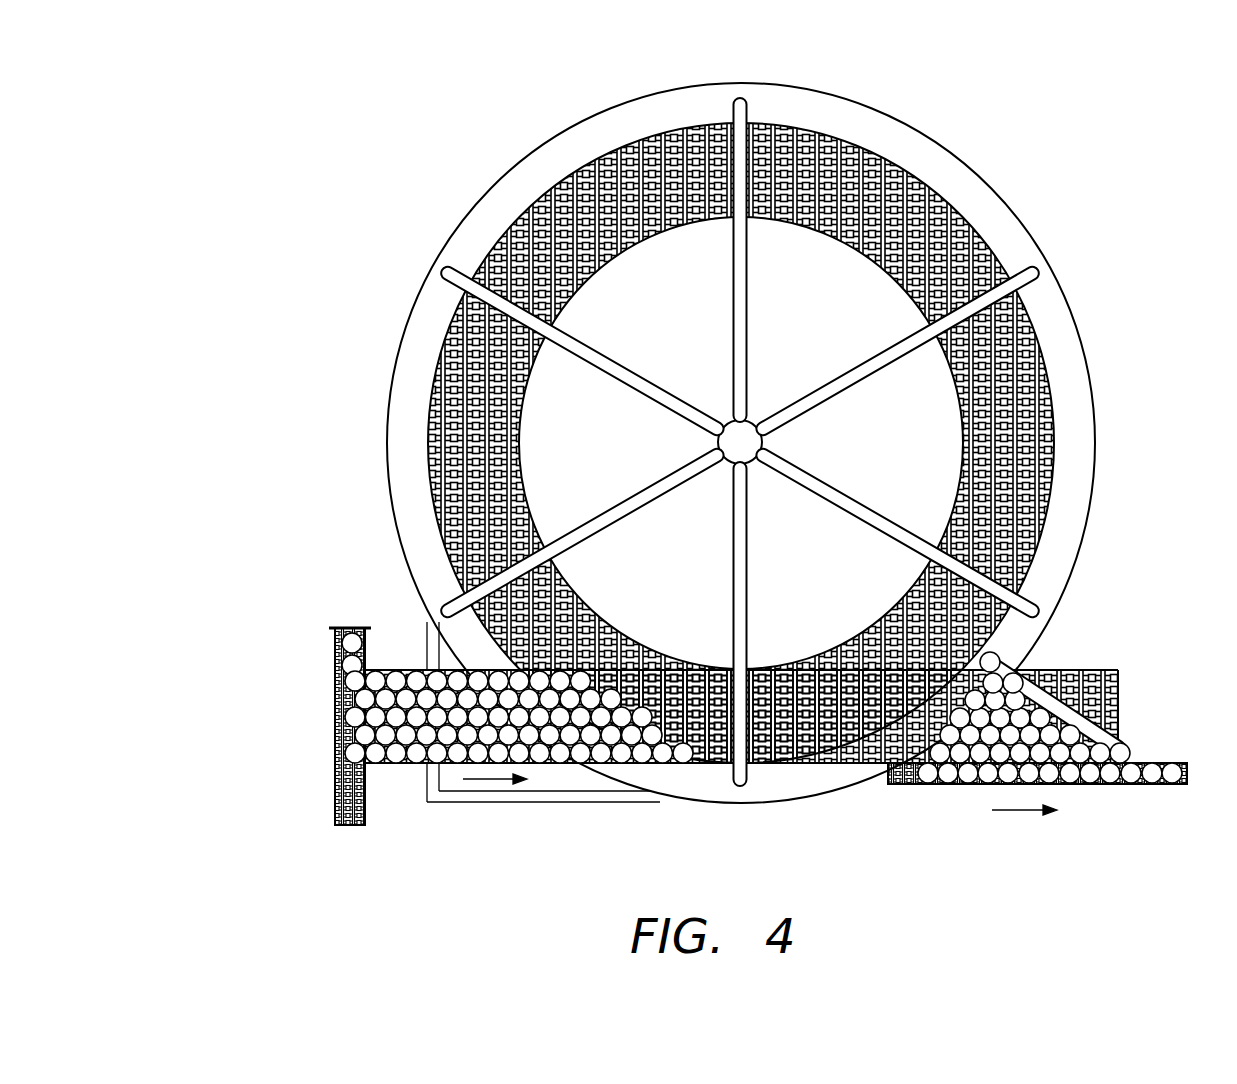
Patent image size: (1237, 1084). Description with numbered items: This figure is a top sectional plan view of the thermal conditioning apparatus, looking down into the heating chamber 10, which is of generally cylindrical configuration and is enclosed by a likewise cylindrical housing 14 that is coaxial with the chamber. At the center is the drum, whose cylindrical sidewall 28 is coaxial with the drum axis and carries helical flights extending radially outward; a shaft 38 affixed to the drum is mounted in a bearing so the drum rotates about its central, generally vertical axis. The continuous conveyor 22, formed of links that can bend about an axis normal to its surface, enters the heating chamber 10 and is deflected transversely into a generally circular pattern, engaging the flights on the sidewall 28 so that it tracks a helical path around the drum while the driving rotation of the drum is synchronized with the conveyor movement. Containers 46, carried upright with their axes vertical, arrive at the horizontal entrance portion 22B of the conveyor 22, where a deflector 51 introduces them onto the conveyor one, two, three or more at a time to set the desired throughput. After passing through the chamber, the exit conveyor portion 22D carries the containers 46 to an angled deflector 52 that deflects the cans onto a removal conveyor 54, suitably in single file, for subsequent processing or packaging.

The heating chamber 10 is at (283, 211).
The housing 14 is at (917, 128).
The continuous conveyor 22 is at (430, 383).
The second portion of the conveyor 22B is at (507, 767).
The exit conveyor portion 22D is at (1050, 670).
The cylindrical sidewall 28 is at (673, 228).
The shaft 38 is at (713, 448).
The containers 46 is at (1152, 770).
The deflector 51 is at (333, 740).
The angled deflector 52 is at (1098, 700).
The removal conveyor 54 is at (913, 785).